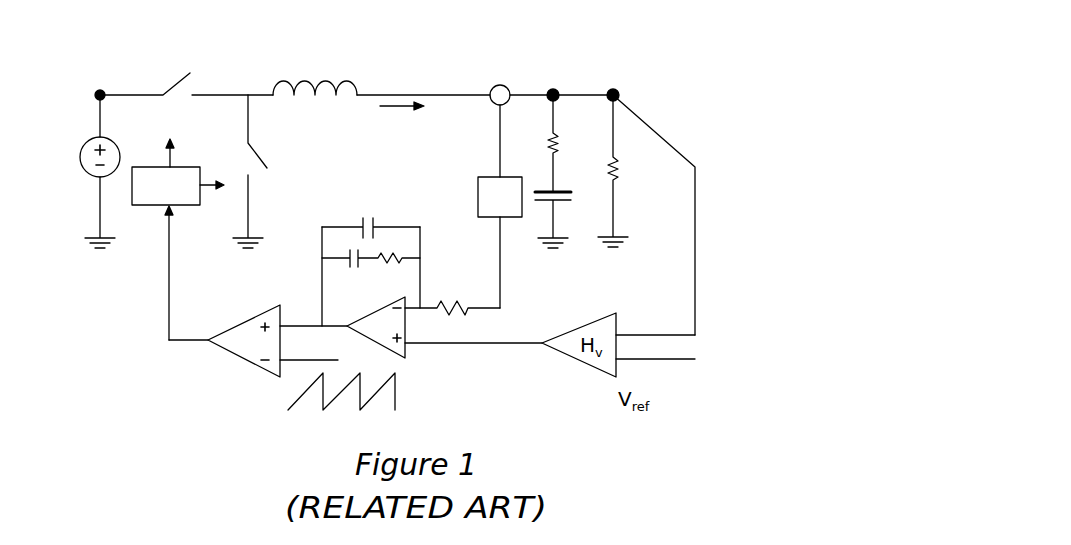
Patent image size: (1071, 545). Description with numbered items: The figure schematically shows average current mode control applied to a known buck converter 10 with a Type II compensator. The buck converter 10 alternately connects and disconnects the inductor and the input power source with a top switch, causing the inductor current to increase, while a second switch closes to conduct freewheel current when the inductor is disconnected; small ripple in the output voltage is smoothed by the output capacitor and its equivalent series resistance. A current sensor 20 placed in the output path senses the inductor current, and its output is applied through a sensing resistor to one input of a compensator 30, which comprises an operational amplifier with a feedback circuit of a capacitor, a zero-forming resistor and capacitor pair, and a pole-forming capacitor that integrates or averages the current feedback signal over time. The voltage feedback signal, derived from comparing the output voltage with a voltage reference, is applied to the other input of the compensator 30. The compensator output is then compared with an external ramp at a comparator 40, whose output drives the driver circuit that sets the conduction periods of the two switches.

The buck converter 10 is at (699, 91).
The current sensor 20 is at (504, 87).
The compensator 30 is at (410, 199).
The comparator 40 is at (239, 322).